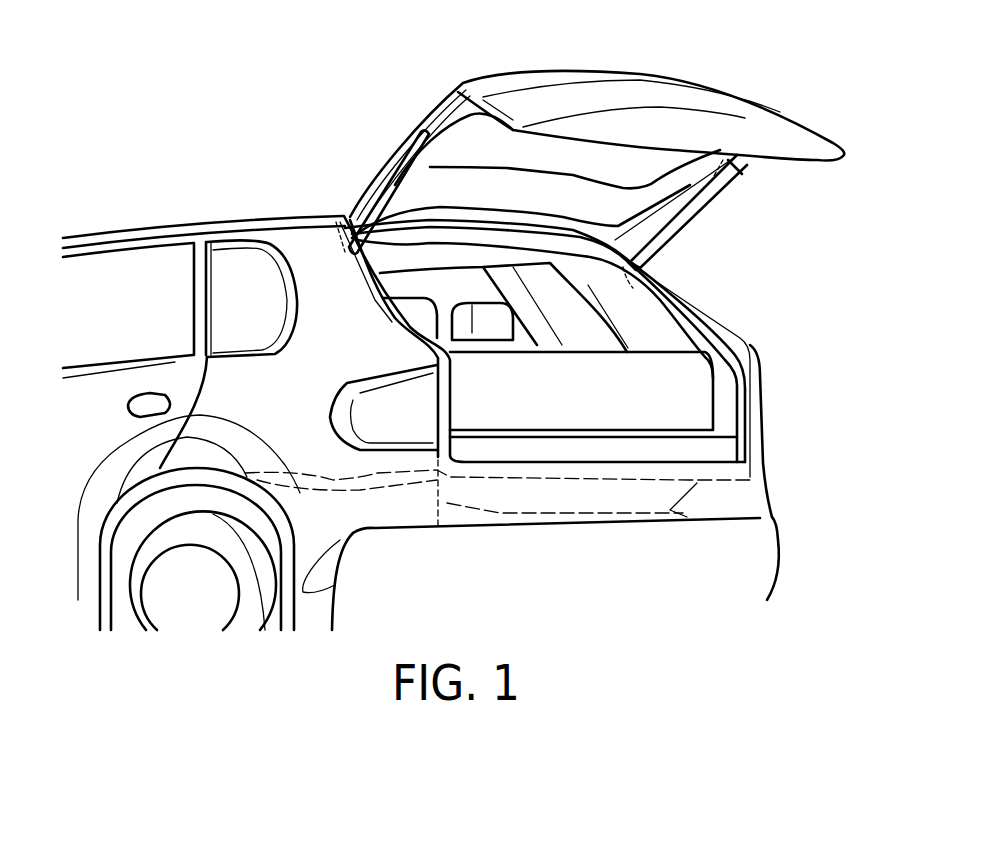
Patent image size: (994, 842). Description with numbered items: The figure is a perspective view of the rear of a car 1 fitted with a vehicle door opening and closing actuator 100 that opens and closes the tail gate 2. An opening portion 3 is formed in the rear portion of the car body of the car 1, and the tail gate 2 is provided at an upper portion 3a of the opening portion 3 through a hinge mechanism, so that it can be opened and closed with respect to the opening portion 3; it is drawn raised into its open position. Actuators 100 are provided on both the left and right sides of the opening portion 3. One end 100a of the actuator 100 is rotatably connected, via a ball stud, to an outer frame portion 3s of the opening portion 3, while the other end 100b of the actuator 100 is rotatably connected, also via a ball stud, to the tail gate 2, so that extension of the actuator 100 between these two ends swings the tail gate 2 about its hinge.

The car 1 is at (222, 199).
The tail gate 2 is at (773, 113).
The opening portion 3 is at (678, 345).
The upper portion of the opening portion 3a is at (348, 220).
The outer frame portion 3s is at (337, 233).
The vehicle door opening and closing actuator 100 is at (696, 231).
The one end of the actuator 100a is at (633, 272).
The other end of the actuator 100b is at (735, 172).